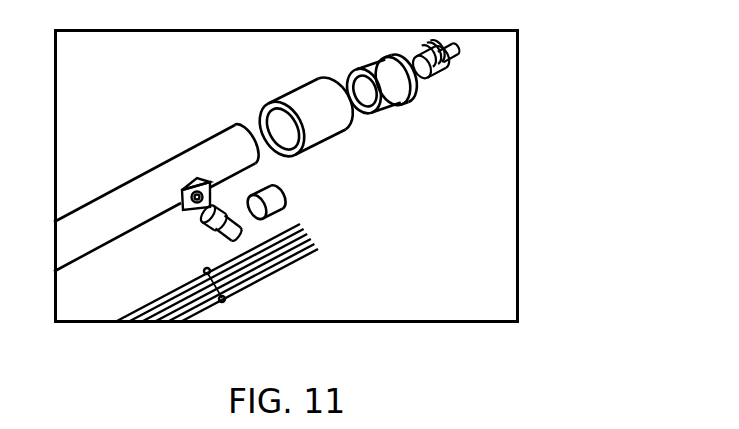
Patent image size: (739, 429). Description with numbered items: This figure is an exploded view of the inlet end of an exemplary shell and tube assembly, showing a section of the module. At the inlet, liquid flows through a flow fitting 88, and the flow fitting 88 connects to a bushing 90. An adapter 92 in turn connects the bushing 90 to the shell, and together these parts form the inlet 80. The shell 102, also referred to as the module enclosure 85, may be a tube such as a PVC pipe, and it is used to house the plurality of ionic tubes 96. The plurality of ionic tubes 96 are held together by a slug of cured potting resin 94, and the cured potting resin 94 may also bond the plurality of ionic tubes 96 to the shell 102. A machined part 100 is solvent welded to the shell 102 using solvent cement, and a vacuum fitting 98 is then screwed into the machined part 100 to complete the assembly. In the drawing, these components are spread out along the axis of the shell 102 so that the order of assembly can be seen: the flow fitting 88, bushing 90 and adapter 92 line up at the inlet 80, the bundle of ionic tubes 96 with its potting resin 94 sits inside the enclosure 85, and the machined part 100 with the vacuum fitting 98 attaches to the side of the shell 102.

The inlet 80 is at (457, 55).
The module enclosure 85 is at (117, 210).
The flow fitting 88 is at (460, 56).
The bushing 90 is at (417, 83).
The adapter 92 is at (337, 130).
The cured potting resin 94 is at (272, 210).
The plurality of ionic tubes 96 is at (315, 252).
The vacuum fitting 98 is at (205, 222).
The machined part 100 is at (173, 200).
The shell 102 is at (90, 212).